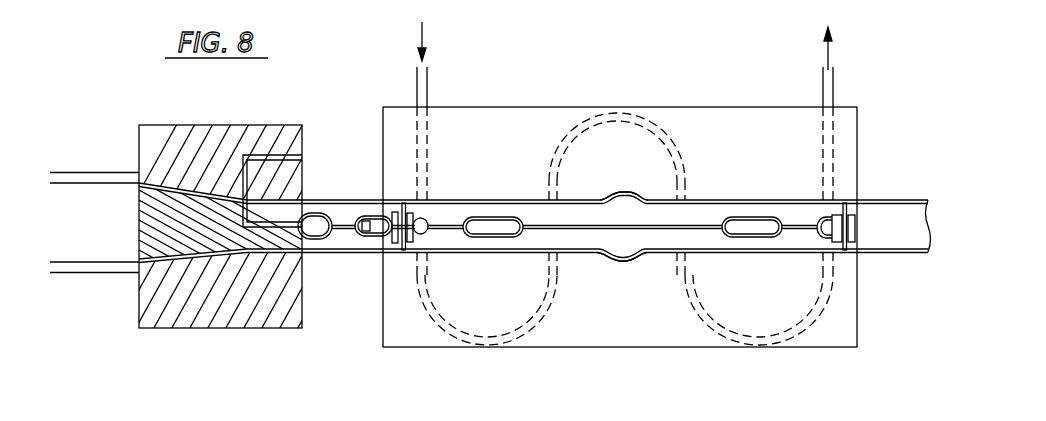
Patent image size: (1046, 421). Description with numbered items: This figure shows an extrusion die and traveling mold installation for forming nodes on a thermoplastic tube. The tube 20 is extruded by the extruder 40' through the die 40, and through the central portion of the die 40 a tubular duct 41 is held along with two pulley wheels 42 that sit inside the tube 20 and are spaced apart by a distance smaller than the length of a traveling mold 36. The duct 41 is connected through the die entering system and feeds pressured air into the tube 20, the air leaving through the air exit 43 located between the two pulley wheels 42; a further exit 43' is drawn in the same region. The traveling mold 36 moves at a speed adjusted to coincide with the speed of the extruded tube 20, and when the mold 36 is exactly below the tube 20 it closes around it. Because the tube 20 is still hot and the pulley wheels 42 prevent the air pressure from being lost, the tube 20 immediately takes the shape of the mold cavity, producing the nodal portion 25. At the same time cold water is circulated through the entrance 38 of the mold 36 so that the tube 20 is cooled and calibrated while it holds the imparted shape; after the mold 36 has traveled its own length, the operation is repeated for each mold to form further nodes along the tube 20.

The thermoplastic tube 20 is at (345, 256).
The nodal portion 25 is at (627, 192).
The traveling mold 36 is at (512, 107).
The water entrance 38 is at (417, 72).
The die 40 is at (254, 251).
The extruder 40' is at (94, 247).
The duct 41 is at (302, 158).
The pulley wheels 42 is at (400, 203).
The air exit 43 is at (574, 308).
The insulator elements 43' is at (565, 277).